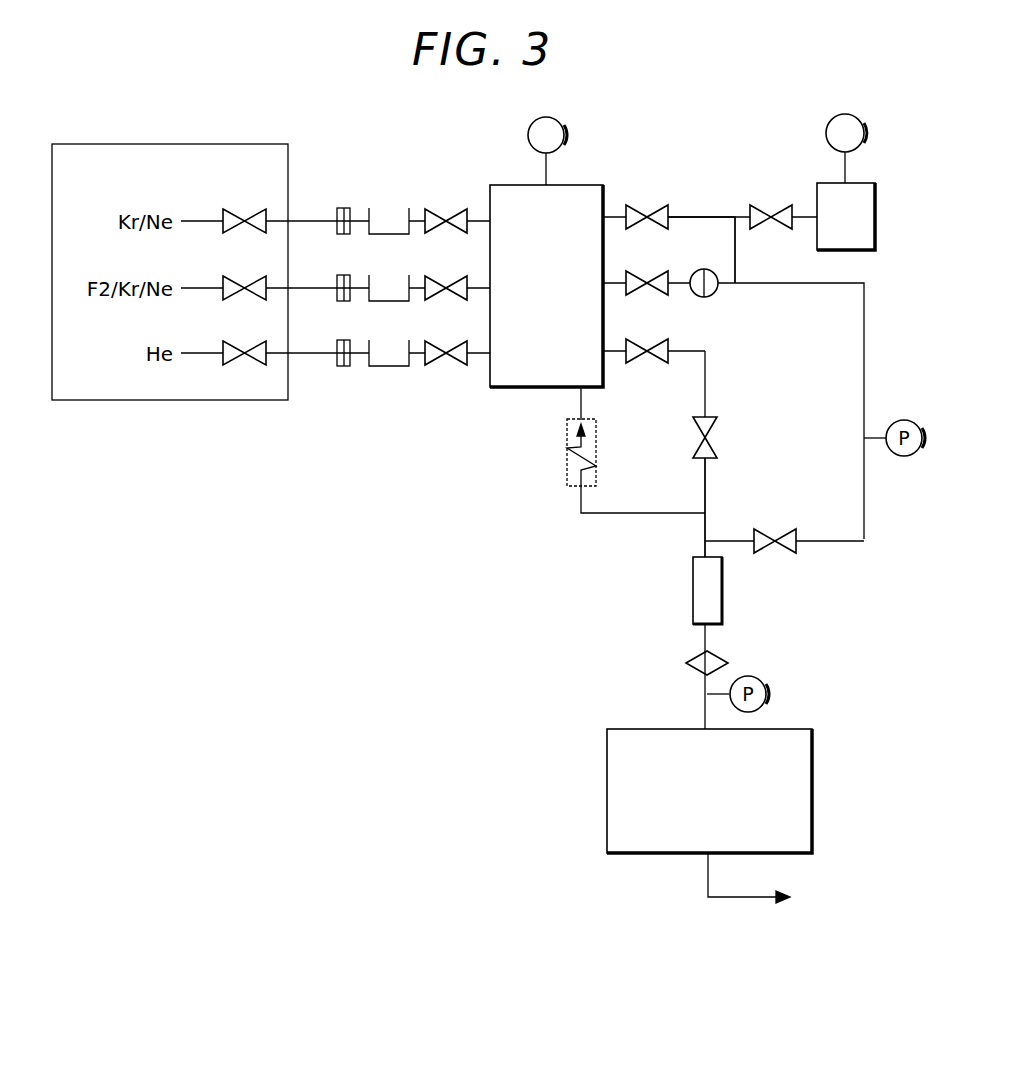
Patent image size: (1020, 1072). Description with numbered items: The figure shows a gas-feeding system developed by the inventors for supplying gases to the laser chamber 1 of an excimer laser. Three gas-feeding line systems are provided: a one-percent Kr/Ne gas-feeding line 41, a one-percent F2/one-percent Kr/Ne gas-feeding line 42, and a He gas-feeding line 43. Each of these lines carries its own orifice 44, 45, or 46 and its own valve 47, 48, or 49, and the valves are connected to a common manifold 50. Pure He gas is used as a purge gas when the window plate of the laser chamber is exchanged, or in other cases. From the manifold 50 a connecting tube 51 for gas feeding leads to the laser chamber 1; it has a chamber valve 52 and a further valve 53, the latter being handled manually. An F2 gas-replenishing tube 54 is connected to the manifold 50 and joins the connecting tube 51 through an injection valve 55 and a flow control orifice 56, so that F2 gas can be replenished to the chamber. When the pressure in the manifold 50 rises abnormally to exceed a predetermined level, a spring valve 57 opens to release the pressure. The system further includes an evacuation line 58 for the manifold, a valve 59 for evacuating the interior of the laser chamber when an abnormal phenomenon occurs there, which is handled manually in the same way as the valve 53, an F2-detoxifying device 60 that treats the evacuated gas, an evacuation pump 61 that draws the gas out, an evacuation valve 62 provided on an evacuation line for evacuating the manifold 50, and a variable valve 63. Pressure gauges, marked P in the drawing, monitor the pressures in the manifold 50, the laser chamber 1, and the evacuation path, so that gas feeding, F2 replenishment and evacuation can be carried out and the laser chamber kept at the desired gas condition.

The excimer laser chamber 1 is at (878, 188).
The 1% Kr/Ne gas-feeding line 41 is at (296, 218).
The 1% F2/1% Kr/Ne gas-feeding line 42 is at (297, 284).
The He gas-feeding line 43 is at (300, 358).
The orifice 44 is at (352, 206).
The orifice 45 is at (348, 274).
The orifice 46 is at (354, 368).
The valve 47 is at (446, 208).
The valve 48 is at (448, 275).
The valve 49 is at (450, 366).
The manifold 50 is at (580, 181).
The connecting tube 51 is at (702, 213).
The chamber valve 52 is at (660, 211).
The valve 53 is at (772, 212).
The F2 gas-replenishing tube 54 is at (610, 278).
The injection valve 55 is at (666, 297).
The flow control orifice 56 is at (722, 296).
The spring valve 57 is at (567, 462).
The evacuation line 58 is at (708, 472).
The valve 59 is at (797, 553).
The F2-detoxifying device 60 is at (692, 580).
The evacuation pump 61 is at (790, 725).
The evacuation valve 62 is at (654, 364).
The variable valve 63 is at (718, 440).